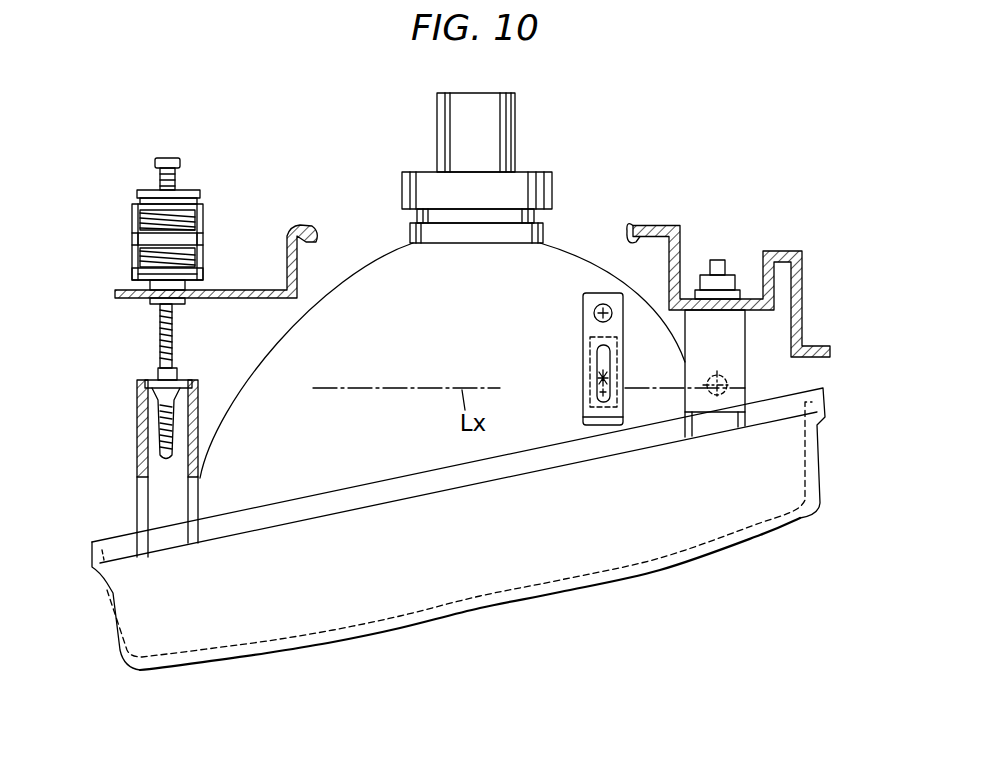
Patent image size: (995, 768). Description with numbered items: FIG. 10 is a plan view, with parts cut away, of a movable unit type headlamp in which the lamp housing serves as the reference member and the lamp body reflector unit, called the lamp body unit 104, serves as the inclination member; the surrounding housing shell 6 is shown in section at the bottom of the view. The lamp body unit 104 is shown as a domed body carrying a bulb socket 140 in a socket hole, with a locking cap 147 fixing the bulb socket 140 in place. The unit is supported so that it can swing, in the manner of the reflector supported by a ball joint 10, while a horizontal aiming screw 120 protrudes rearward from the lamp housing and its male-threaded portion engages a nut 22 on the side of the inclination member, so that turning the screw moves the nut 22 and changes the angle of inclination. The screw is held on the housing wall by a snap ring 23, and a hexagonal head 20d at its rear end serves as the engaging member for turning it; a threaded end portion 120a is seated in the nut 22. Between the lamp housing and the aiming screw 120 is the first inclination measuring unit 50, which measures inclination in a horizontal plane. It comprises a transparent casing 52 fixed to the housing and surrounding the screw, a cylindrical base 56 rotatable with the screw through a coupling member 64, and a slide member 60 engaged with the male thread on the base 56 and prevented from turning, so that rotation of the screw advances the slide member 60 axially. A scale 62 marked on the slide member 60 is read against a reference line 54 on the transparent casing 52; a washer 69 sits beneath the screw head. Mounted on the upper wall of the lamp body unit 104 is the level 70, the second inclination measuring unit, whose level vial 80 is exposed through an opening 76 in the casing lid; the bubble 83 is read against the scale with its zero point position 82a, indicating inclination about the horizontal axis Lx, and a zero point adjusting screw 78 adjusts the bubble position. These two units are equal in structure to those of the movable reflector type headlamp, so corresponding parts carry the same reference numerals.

The lamp housing 6 is at (445, 623).
The ball joint 10 is at (735, 384).
The hexagonal head 20d is at (181, 161).
The nut 22 is at (150, 410).
The snap ring 23 is at (150, 300).
The first inclination measuring unit 50 is at (150, 206).
The transparent casing 52 is at (203, 212).
The reference line 54 is at (133, 233).
The cylindrical base 56 is at (203, 264).
The slide member 60 is at (200, 233).
The scale 62 is at (133, 262).
The coupling member 64 is at (138, 193).
The washer 69 is at (135, 197).
The level 70 is at (711, 330).
The opening 76 is at (596, 383).
The zero point adjusting screw 78 is at (592, 318).
The level vial 80 is at (588, 342).
The zero point position of the scale 82a is at (596, 375).
The bubble 83 is at (594, 396).
The lamp body unit 104 is at (380, 260).
The horizontal aiming screw 120 is at (148, 338).
The screw end nut 120a is at (160, 362).
The bulb socket 140 is at (522, 128).
The locking cap 147 is at (545, 172).